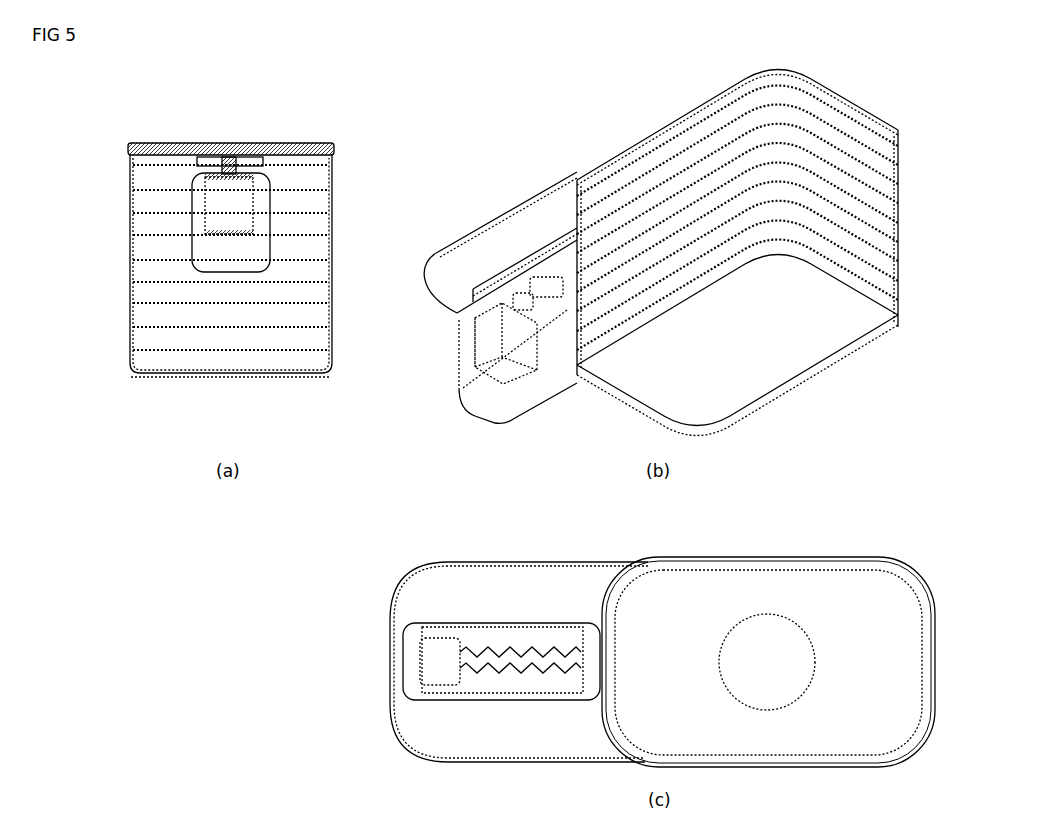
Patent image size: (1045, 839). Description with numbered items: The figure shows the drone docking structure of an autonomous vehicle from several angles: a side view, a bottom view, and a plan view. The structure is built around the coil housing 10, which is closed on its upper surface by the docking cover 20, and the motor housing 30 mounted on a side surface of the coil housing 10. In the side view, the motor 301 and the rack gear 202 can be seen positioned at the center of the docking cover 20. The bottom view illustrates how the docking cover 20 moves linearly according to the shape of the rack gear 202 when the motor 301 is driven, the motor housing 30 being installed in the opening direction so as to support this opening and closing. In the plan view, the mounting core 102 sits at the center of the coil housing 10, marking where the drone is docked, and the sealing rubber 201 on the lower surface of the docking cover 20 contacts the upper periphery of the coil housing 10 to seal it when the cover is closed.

The coil housing 10 is at (130, 315).
The docking cover 20 is at (228, 143).
The sealing rubber 201 is at (128, 148).
The rack gear 202 is at (530, 262).
The motor housing 30 is at (205, 245).
The motor 301 is at (212, 203).
The mounting core 102 is at (767, 614).